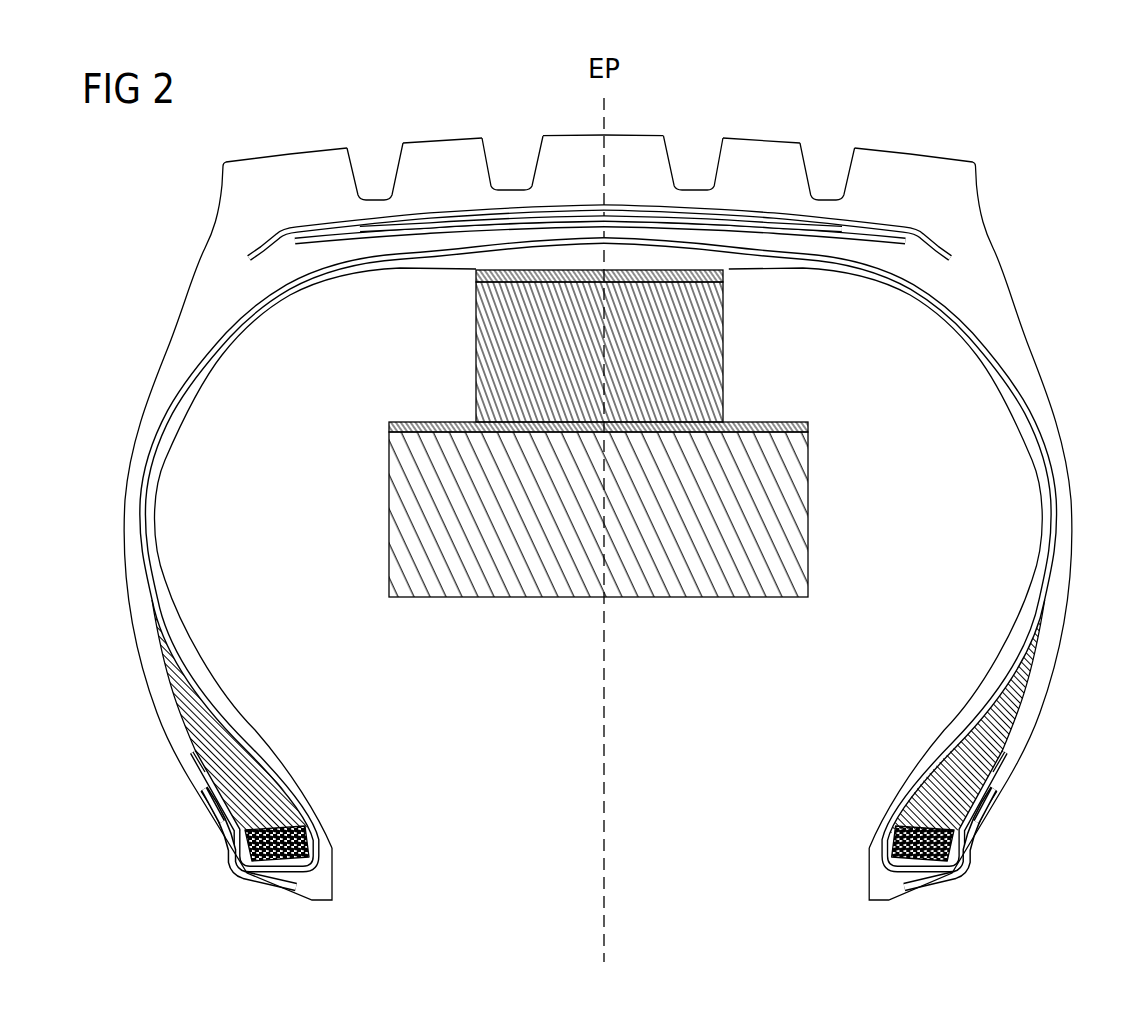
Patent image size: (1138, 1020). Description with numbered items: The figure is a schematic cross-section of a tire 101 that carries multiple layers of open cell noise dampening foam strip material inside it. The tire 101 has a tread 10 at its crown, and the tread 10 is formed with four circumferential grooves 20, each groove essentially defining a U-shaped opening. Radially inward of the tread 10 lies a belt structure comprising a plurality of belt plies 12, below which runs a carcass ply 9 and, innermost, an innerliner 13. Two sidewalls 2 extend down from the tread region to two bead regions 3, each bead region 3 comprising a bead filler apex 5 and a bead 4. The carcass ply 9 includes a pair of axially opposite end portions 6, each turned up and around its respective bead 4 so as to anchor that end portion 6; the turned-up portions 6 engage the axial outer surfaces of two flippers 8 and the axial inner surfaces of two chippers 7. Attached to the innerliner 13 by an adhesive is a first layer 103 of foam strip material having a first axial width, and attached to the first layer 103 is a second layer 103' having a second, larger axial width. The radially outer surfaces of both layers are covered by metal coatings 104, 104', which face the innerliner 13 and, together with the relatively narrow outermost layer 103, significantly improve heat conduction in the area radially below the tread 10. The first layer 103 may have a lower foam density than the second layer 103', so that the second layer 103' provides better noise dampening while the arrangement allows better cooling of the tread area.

The tire 101 is at (603, 478).
The sidewall 2 is at (153, 382).
The bead region 3 is at (603, 755).
The bead 4 is at (297, 847).
The bead filler apex 5 is at (227, 735).
The end portion of the carcass ply 6 is at (195, 760).
The chipper 7 is at (202, 800).
The flipper 8 is at (227, 837).
The carcass ply 9 is at (212, 358).
The tread 10 is at (627, 126).
The belt plies 12 is at (535, 208).
The innerliner 13 is at (250, 330).
The circumferential grooves 20 is at (369, 142).
The first layer of open cell noise dampening foam strip material 103 is at (546, 352).
The metal coating 104 is at (562, 296).
The second layer of open cell noise dampening foam strip material 103' is at (559, 514).
The metal coating 104' is at (560, 447).